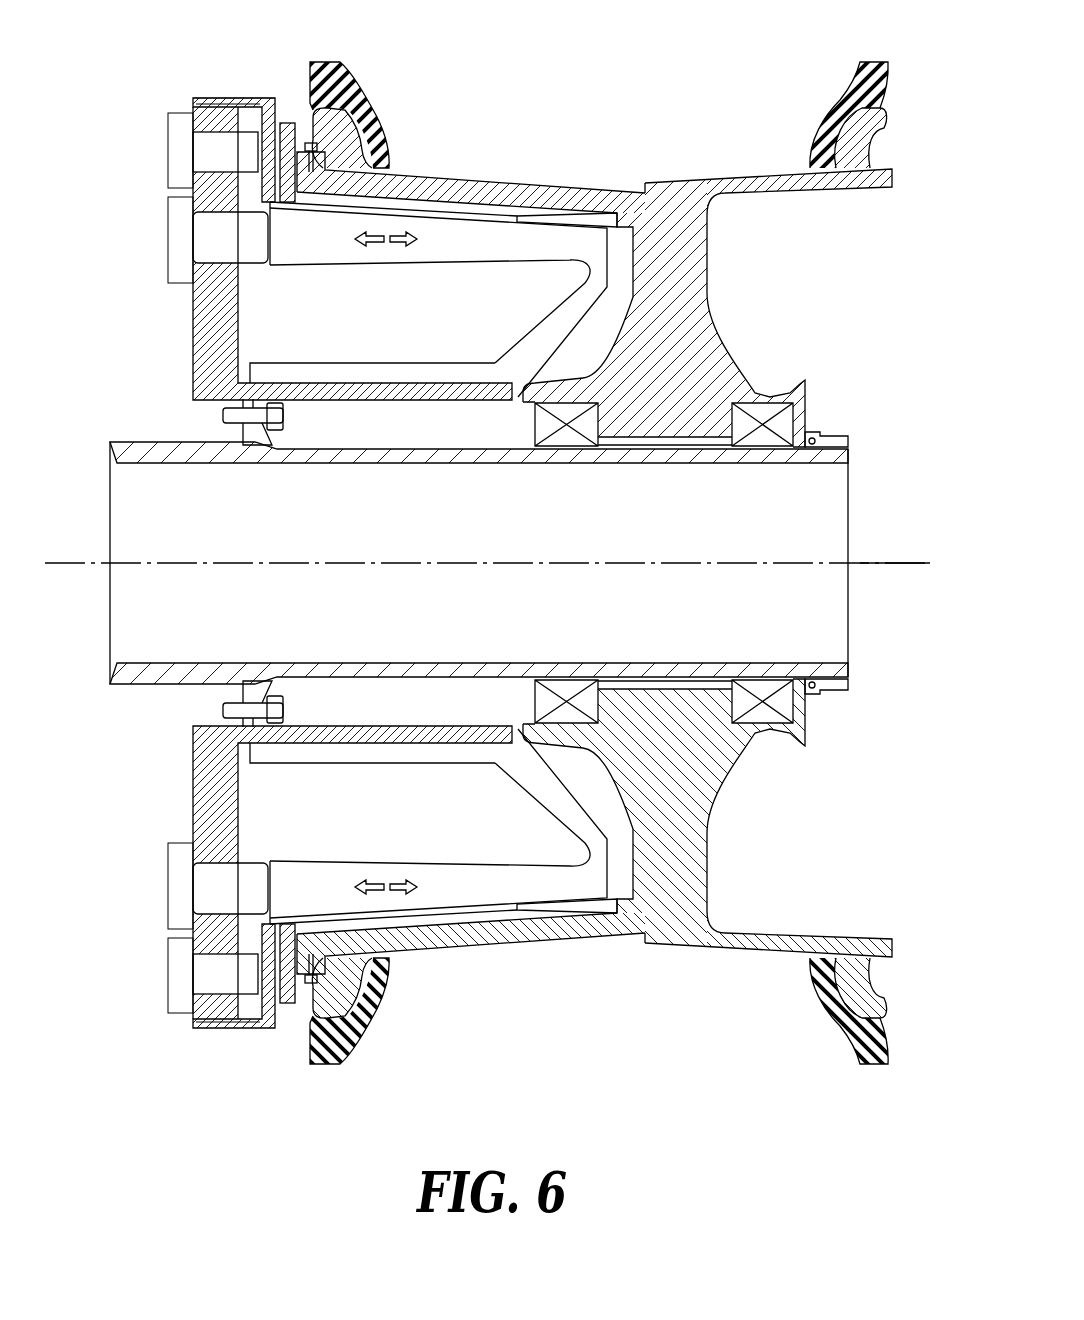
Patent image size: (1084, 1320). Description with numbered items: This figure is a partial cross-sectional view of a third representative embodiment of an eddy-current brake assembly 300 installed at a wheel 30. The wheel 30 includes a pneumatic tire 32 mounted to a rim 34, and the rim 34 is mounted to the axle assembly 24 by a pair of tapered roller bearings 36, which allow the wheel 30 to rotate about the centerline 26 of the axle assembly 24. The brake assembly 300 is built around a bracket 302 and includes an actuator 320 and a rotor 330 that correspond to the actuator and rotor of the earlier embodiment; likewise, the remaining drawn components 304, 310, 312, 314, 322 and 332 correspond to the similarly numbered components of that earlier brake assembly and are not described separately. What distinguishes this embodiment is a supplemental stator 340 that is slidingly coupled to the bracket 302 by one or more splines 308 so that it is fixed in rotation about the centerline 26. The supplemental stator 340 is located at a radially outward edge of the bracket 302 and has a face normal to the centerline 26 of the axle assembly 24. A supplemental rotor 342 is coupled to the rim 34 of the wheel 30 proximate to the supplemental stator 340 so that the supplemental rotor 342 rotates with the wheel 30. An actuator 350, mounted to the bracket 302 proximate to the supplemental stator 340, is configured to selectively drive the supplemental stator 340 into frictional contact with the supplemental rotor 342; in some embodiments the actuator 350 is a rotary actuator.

The axle assembly 24 is at (178, 686).
The centerline 26 is at (875, 562).
The wheel 30 is at (902, 110).
The pneumatic tire 32 is at (893, 70).
The rim 34 is at (740, 346).
The tapered roller bearings 36 is at (608, 447).
The brake assembly 300 is at (148, 101).
The bracket 302 is at (192, 346).
The housing base plate 304 is at (324, 381).
The splines 308 is at (210, 104).
The piston 310 is at (538, 331).
The piston head 312 is at (428, 240).
The seal ring 314 is at (520, 222).
The actuator 320 is at (168, 236).
The bolt 322 is at (222, 252).
The rotor 330 is at (485, 205).
The liner 332 is at (440, 212).
The supplemental stator 340 is at (243, 99).
The supplemental rotor 342 is at (288, 122).
The actuator 350 is at (168, 150).